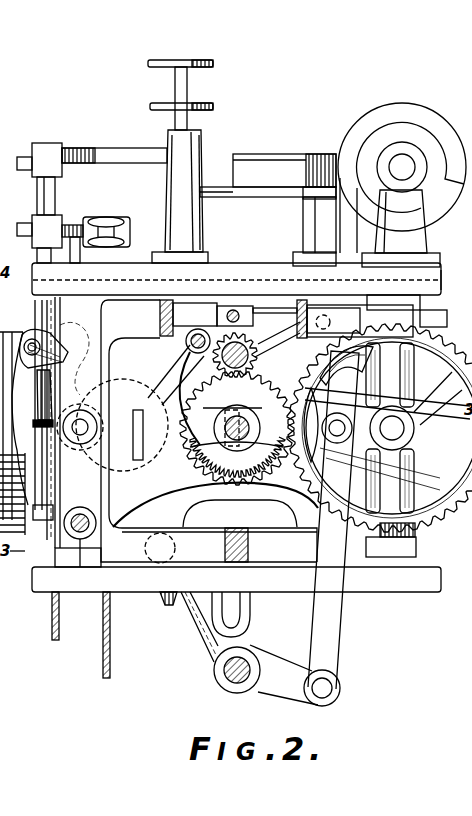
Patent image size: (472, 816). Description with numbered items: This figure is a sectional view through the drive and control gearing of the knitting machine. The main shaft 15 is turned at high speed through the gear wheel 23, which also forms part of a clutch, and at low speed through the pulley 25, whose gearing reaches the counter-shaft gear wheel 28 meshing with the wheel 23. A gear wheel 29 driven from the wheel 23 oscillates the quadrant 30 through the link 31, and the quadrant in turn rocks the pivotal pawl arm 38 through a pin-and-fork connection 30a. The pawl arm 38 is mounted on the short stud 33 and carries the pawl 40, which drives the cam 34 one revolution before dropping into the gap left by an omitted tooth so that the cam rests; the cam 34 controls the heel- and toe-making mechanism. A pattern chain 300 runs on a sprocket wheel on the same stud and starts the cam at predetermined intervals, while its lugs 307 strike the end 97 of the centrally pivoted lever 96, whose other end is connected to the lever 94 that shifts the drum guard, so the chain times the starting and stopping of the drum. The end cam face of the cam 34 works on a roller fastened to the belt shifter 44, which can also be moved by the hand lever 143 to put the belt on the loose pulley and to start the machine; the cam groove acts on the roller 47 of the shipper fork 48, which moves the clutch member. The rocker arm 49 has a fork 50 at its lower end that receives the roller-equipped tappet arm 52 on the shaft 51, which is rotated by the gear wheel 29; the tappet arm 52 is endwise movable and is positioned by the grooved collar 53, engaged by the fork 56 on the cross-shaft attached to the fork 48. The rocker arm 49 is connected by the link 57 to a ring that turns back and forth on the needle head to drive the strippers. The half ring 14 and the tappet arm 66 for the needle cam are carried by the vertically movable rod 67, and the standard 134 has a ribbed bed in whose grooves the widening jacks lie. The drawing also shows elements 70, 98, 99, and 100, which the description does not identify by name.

The hand wheel knob 99 is at (156, 61).
The adjusting screw 98 is at (188, 92).
The lock nut 100 is at (158, 104).
The half ring 14 is at (105, 148).
The vertically movable rod 67 is at (37, 194).
The tappet arm 66 is at (112, 218).
The link 57 is at (240, 186).
The standard 134 is at (305, 243).
The rocker arm 49 is at (326, 222).
The cam wheel 70 is at (404, 112).
The lever 94 is at (363, 237).
The hand lever 143 is at (50, 428).
The grooved collar 53 is at (438, 299).
The gear wheel 28 is at (230, 303).
The centrally pivoted lever 96 is at (298, 300).
The short stud 33 is at (57, 540).
The pulley 25 is at (20, 333).
The pawl 40 is at (45, 335).
The fork 56 is at (82, 432).
The end of lever 97 is at (177, 383).
The shipper fork 48 is at (174, 380).
The main shaft 15 is at (238, 434).
The pivotal pawl arm 38 is at (193, 472).
The roller 47 is at (145, 448).
The lugs 307 is at (124, 688).
The gear wheel 23 is at (288, 482).
The gear wheel 29 is at (440, 512).
The shaft 51 is at (402, 430).
The tappet arm 52 is at (418, 494).
The fork 50 is at (430, 362).
The link 31 is at (340, 633).
The quadrant 30 is at (195, 630).
The pin-and-fork connection 30a is at (141, 592).
The pattern chain 300 is at (59, 630).
The cam 34 is at (100, 545).
The belt shifter 44 is at (70, 545).